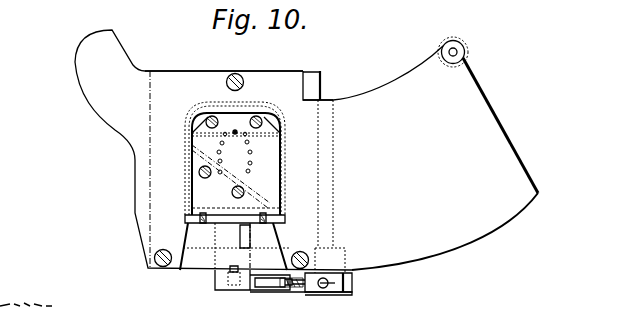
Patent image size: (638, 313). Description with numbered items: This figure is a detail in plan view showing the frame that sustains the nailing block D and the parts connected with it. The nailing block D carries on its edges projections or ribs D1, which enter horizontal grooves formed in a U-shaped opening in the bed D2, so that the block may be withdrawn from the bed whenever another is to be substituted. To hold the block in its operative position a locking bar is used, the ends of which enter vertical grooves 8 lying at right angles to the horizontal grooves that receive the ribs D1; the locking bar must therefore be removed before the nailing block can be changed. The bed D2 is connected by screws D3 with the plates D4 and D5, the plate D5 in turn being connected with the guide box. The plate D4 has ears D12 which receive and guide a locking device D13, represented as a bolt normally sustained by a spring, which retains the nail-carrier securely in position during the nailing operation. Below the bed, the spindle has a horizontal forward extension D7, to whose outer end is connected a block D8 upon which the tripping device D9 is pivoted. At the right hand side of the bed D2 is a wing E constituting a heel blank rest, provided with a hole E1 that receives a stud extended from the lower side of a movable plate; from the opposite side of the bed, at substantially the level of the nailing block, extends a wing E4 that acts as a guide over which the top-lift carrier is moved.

The wing E is at (502, 128).
The hole E1 is at (511, 26).
The wing E4 is at (66, 91).
The nailing block D is at (122, 191).
The projections or ribs D1 is at (264, 110).
The bed D2 is at (202, 66).
The screws D3 is at (237, 74).
The plate D4 is at (182, 282).
The plate D5 is at (329, 70).
The horizontal forward extension D7 is at (241, 237).
The block D8 is at (257, 299).
The tripping device D9 is at (282, 288).
The ears D12 is at (350, 311).
The locking device D13 is at (380, 289).
The vertical grooves 8 is at (188, 216).